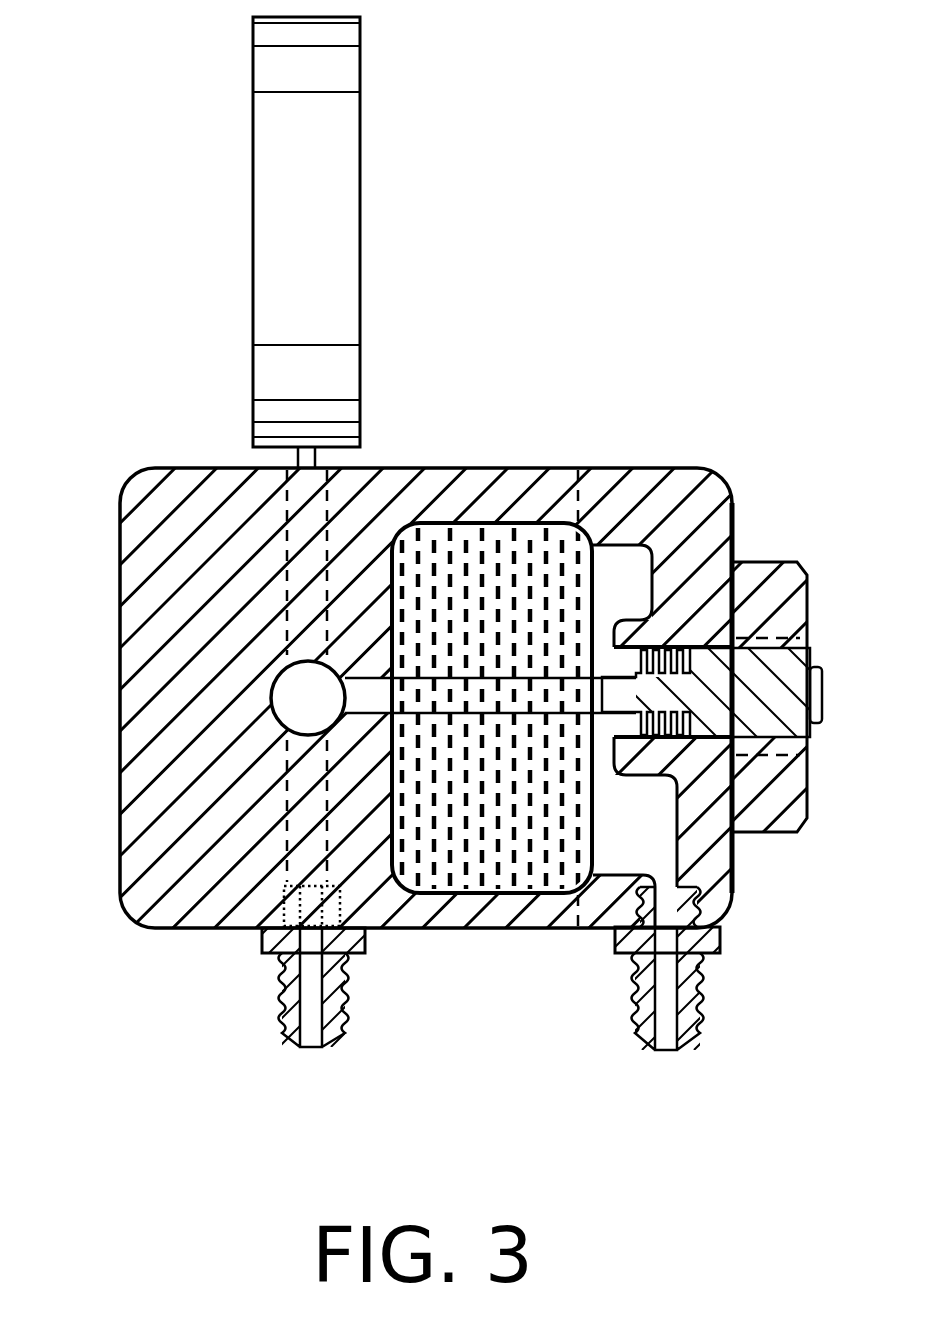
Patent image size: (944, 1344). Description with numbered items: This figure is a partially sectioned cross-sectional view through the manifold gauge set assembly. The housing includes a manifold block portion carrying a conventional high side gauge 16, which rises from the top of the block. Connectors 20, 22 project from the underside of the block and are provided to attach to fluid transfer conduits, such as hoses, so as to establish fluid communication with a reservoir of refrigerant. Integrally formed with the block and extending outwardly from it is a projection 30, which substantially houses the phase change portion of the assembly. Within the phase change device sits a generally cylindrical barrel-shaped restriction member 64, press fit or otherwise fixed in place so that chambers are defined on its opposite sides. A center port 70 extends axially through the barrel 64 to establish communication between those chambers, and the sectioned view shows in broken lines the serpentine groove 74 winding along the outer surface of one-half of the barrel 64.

The high side gauge 16 is at (253, 152).
The connector 20 is at (665, 1050).
The connector 22 is at (297, 1040).
The projection 30 is at (600, 657).
The barrel-shaped restriction member 64 is at (430, 608).
The center port 70 is at (488, 695).
The serpentine groove 74 is at (446, 582).